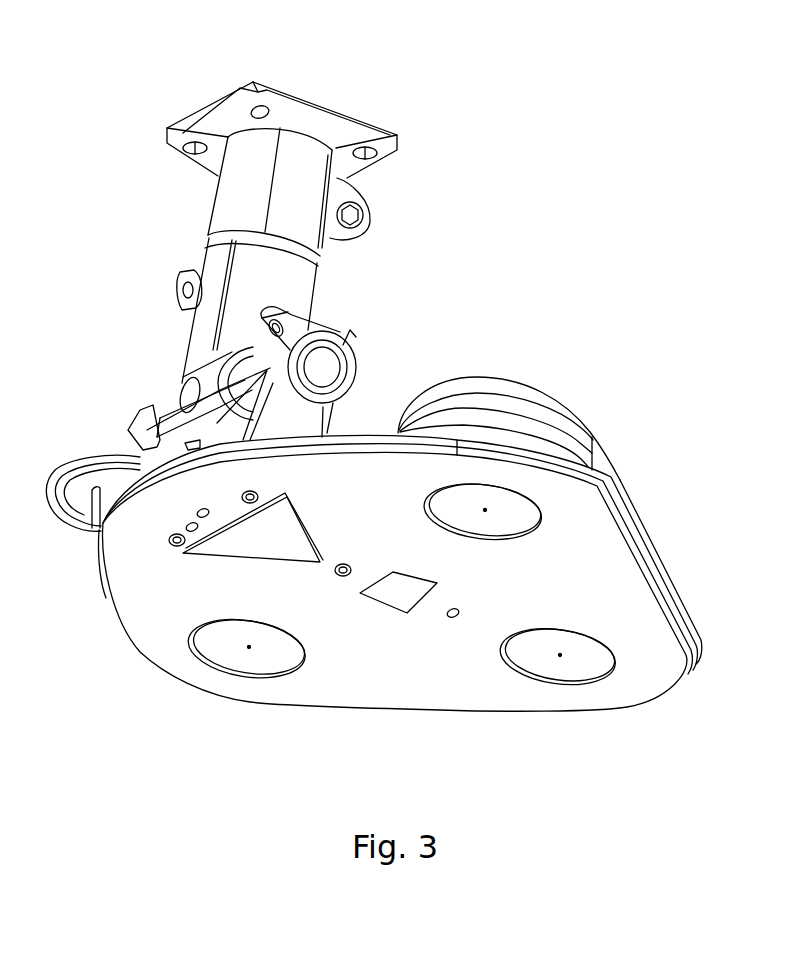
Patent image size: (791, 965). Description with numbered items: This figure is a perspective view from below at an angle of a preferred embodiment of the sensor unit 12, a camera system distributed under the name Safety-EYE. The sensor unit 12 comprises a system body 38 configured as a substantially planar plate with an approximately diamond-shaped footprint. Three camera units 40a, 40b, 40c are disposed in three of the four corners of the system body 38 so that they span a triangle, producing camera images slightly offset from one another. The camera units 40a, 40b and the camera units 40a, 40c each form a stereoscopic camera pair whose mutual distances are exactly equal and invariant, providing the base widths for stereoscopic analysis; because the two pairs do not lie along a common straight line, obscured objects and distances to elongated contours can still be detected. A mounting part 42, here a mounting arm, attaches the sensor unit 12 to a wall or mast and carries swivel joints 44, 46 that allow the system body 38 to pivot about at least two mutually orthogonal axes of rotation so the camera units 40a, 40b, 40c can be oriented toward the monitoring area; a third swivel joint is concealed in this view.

The sensor unit 12 is at (581, 171).
The system body 38 is at (407, 693).
The camera unit 40a is at (585, 668).
The camera unit 40b is at (225, 653).
The camera unit 40c is at (517, 517).
The mounting part 42 is at (314, 98).
The swivel joint 44 is at (207, 242).
The swivel joint 46 is at (350, 353).